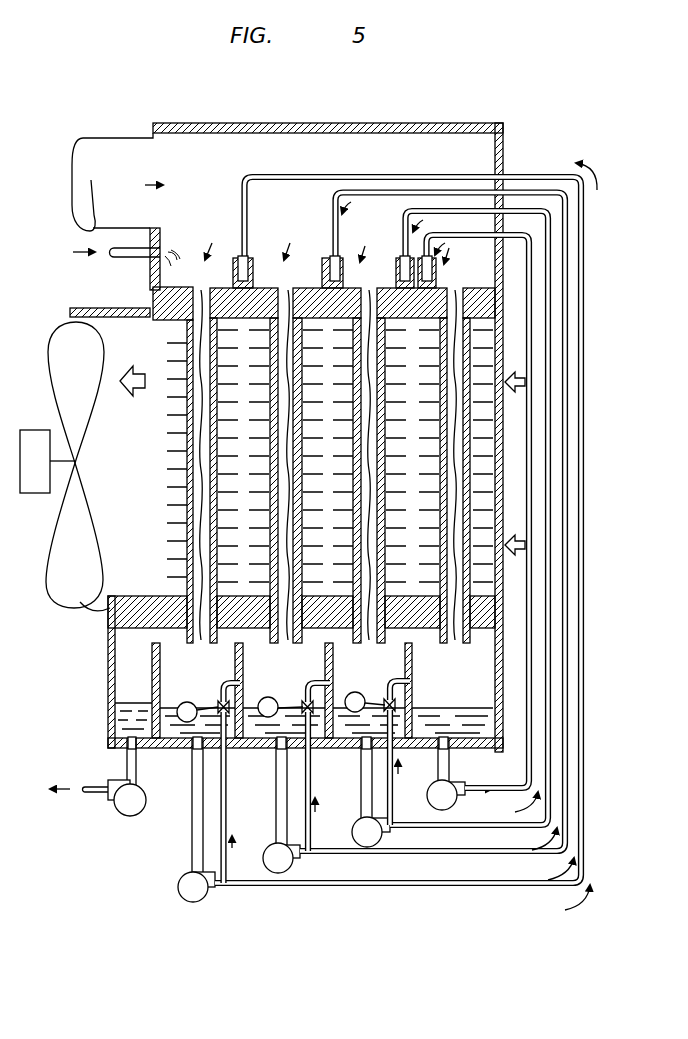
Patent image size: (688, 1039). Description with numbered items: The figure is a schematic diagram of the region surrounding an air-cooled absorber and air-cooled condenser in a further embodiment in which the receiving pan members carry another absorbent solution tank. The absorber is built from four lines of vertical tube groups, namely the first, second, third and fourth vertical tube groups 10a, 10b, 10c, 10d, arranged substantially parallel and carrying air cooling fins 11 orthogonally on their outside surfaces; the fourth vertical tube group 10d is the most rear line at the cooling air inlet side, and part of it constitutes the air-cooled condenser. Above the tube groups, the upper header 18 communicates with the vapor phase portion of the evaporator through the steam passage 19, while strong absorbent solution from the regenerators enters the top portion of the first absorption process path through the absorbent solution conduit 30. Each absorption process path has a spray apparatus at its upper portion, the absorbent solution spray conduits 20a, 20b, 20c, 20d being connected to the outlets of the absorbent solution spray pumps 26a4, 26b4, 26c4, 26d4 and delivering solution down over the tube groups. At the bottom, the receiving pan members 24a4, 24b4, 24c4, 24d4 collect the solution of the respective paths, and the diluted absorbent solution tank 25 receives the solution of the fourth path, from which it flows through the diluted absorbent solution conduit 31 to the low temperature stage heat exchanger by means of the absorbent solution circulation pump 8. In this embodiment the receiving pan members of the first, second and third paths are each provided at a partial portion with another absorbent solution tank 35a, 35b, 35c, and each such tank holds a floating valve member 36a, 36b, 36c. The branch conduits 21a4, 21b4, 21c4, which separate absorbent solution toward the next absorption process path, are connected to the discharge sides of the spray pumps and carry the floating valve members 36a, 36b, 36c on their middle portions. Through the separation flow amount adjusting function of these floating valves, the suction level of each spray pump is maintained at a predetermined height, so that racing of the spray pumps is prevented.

The upper header 18 is at (190, 133).
The steam passage 19 is at (121, 140).
The absorbent solution conduit 30 is at (131, 259).
The air cooling fins 11 is at (168, 360).
The first vertical tube group 10a is at (201, 482).
The second vertical tube group 10b is at (275, 512).
The third vertical tube group 10c is at (370, 468).
The fourth vertical tube group 10d is at (455, 520).
The absorbent solution spray conduit 20a is at (525, 173).
The absorbent solution spray conduit 20b is at (330, 204).
The absorbent solution spray conduit 20c is at (401, 223).
The absorbent solution spray conduit 20d is at (460, 230).
The receiving pan member 24a4 is at (165, 686).
The receiving pan member 24b4 is at (245, 653).
The receiving pan member 24c4 is at (413, 657).
The water tank compartment 24d4 is at (467, 680).
The diluted absorbent solution tank 25 is at (120, 723).
The floating valve member 36a is at (215, 703).
The floating valve member 36b is at (300, 700).
The floating valve member 36c is at (387, 698).
The absorbent solution tank 35a is at (177, 737).
The absorbent solution tank 35b is at (262, 749).
The absorbent solution tank 35c is at (343, 749).
The absorbent solution circulation pump 8 is at (137, 818).
The diluted absorbent solution conduit 31 is at (93, 796).
The absorbent solution spray pump 26a4 is at (193, 902).
The absorbent solution spray pump 26b4 is at (270, 874).
The absorbent solution spray pump 26c4 is at (348, 848).
The absorbent solution spray pump 26d4 is at (458, 808).
The branch conduit 21a4 is at (238, 865).
The branch conduit 21b4 is at (313, 830).
The branch conduit 21c4 is at (395, 800).